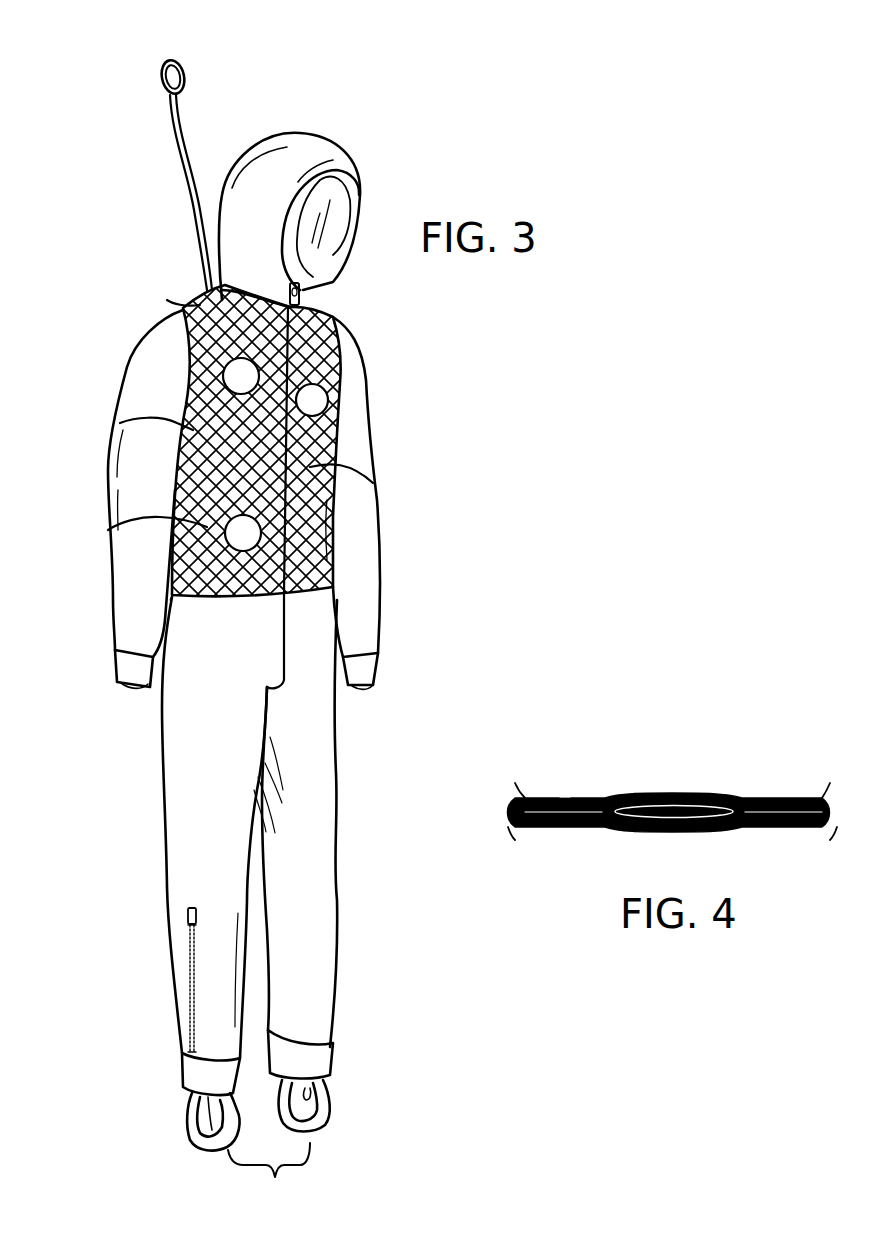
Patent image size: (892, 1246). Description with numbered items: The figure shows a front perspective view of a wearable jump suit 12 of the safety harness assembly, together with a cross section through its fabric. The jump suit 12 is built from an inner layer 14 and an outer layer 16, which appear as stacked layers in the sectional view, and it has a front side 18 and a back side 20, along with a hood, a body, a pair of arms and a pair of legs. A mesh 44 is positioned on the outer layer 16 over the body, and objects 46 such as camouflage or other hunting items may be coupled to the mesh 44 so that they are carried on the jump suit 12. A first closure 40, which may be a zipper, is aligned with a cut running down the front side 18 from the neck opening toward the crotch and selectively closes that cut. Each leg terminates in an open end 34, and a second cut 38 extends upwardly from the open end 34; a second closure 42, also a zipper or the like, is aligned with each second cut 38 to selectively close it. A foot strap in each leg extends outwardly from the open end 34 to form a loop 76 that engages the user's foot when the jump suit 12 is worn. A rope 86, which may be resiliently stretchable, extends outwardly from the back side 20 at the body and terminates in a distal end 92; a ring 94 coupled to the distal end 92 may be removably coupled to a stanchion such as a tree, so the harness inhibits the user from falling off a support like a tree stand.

In FIG. 3, the jump suit 12 is at (378, 435).
In FIG. 4, the jump suit 12 is at (563, 800).
In FIG. 4, the inner layer 14 is at (793, 827).
In FIG. 3, the outer layer 16 is at (340, 353).
In FIG. 4, the outer layer 16 is at (783, 802).
In FIG. 3, the front side 18 is at (373, 483).
In FIG. 3, the back side 20 is at (127, 362).
In FIG. 3, the open end 34 is at (195, 1105).
In FIG. 3, the second cut 38 is at (190, 975).
In FIG. 3, the first closure 40 is at (307, 290).
In FIG. 3, the second closures 42 is at (188, 917).
In FIG. 3, the mesh 44 is at (120, 423).
In FIG. 3, the objects 46 is at (108, 537).
In FIG. 3, the loop 76 is at (269, 1178).
In FIG. 3, the rope 86 is at (165, 128).
In FIG. 3, the distal end 92 is at (162, 95).
In FIG. 3, the ring 94 is at (175, 62).